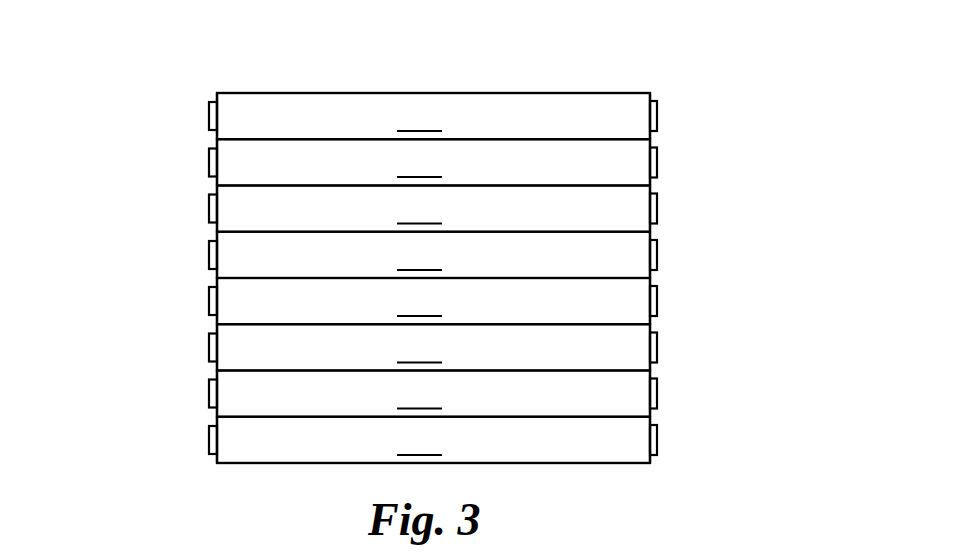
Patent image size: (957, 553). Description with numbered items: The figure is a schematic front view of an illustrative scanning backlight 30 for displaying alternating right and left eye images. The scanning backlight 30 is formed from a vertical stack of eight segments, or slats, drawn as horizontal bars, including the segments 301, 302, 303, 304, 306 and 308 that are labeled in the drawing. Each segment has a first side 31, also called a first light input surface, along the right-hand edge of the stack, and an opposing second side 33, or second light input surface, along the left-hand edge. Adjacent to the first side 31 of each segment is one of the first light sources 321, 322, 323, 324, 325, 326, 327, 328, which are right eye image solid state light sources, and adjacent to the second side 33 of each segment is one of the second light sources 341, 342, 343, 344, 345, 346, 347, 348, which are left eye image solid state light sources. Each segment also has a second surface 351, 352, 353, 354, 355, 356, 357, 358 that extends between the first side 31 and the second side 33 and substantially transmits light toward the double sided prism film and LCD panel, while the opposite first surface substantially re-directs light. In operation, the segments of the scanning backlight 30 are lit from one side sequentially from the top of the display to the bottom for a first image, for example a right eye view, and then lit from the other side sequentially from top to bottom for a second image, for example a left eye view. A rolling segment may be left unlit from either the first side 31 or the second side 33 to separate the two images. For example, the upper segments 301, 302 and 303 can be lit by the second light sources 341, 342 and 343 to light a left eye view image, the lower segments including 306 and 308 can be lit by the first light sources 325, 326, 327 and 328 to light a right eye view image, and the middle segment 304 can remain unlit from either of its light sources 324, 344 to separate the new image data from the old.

The scanning backlight 30 is at (522, 72).
The first side 31 is at (652, 93).
The second side 33 is at (216, 94).
The segment 301 is at (128, 116).
The segment 302 is at (738, 162).
The segment 303 is at (128, 394).
The segment 304 is at (738, 255).
The segment 306 is at (738, 348).
The segment 308 is at (738, 440).
The first light source 321 is at (657, 111).
The first light source 322 is at (657, 158).
The first light source 323 is at (657, 204).
The first light source 324 is at (657, 250).
The first light source 325 is at (657, 296).
The first light source 326 is at (657, 342).
The first light source 327 is at (657, 388).
The first light source 328 is at (657, 435).
The second light source 341 is at (209, 113).
The second light source 342 is at (209, 160).
The second light source 343 is at (209, 206).
The second light source 344 is at (209, 252).
The second light source 345 is at (209, 298).
The second light source 346 is at (209, 344).
The second light source 347 is at (209, 390).
The second light source 348 is at (209, 437).
The second surface 351 is at (419, 114).
The second surface 352 is at (419, 160).
The second surface 353 is at (419, 207).
The second surface 354 is at (419, 253).
The second surface 355 is at (419, 299).
The second surface 356 is at (419, 346).
The second surface 357 is at (419, 392).
The second surface 358 is at (419, 438).